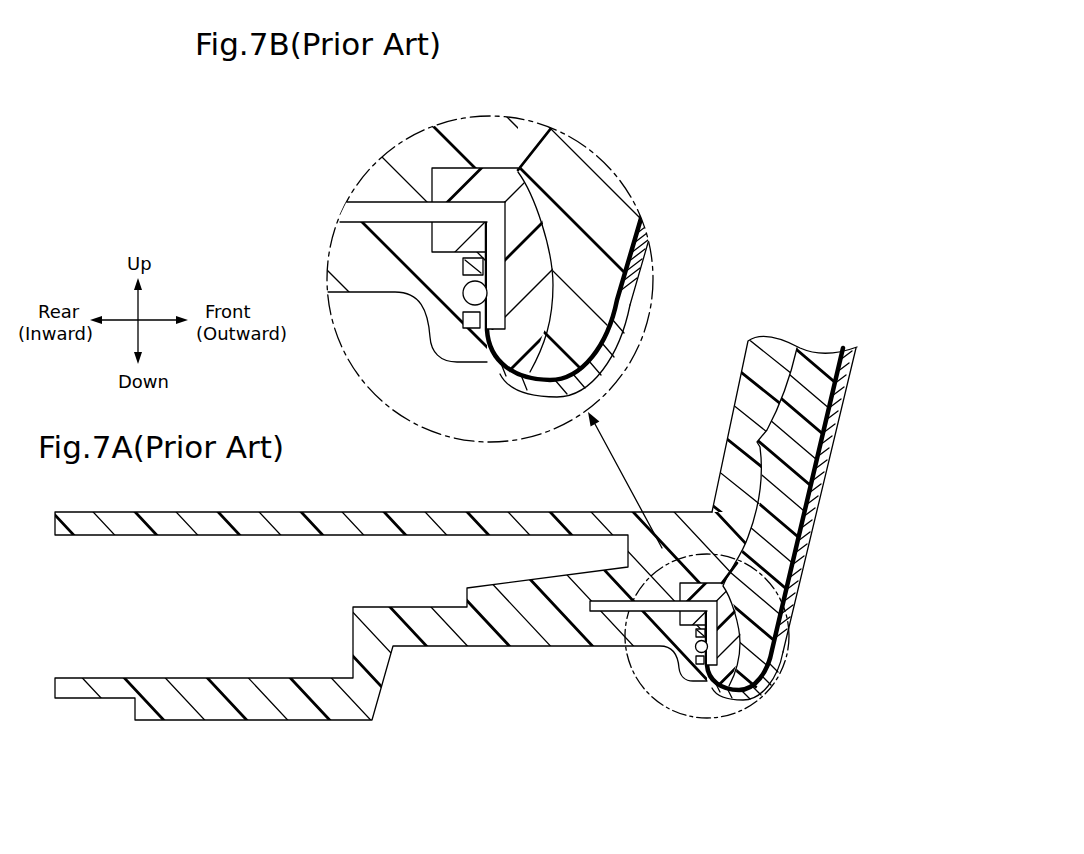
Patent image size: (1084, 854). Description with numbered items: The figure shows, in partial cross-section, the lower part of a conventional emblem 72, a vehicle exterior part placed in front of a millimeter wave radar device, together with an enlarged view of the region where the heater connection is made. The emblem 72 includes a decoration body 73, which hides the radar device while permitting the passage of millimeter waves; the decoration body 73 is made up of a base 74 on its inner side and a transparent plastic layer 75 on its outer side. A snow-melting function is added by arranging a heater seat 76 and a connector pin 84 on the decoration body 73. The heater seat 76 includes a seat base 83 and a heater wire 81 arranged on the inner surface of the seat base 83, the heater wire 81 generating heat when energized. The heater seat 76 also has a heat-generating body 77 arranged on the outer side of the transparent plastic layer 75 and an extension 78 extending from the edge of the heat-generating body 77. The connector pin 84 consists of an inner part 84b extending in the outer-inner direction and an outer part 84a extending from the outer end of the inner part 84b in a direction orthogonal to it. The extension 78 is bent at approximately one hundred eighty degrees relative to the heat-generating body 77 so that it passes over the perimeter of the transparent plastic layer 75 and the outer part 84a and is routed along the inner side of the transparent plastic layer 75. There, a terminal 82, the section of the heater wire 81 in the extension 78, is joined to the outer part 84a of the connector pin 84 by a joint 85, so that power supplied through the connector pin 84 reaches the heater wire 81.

In FIG. 7A, the emblem 72 is at (575, 704).
In FIG. 7B, the emblem 72 is at (430, 293).
In FIG. 7A, the decoration body 73 is at (720, 532).
In FIG. 7B, the decoration body 73 is at (461, 281).
In FIG. 7A, the base 74 is at (772, 339).
In FIG. 7B, the base 74 is at (496, 120).
In FIG. 7A, the transparent plastic layer 75 is at (812, 347).
In FIG. 7B, the transparent plastic layer 75 is at (573, 145).
In FIG. 7A, the heater seat 76 is at (808, 499).
In FIG. 7B, the heater seat 76 is at (611, 254).
In FIG. 7A, the heat-generating body 77 is at (808, 499).
In FIG. 7B, the heat-generating body 77 is at (611, 254).
In FIG. 7A, the extension 78 is at (703, 695).
In FIG. 7B, the extension 78 is at (553, 396).
In FIG. 7A, the heater wire 81 is at (838, 352).
In FIG. 7B, the heater wire 81 is at (620, 232).
In FIG. 7A, the terminal 82 is at (702, 647).
In FIG. 7B, the terminal 82 is at (480, 323).
In FIG. 7A, the seat base 83 is at (847, 382).
In FIG. 7B, the seat base 83 is at (620, 320).
In FIG. 7A, the connector pin 84 is at (607, 615).
In FIG. 7B, the connector pin 84 is at (358, 299).
In FIG. 7B, the outer part 84a is at (505, 333).
In FIG. 7B, the inner part 84b is at (348, 204).
In FIG. 7A, the joint 85 is at (700, 646).
In FIG. 7B, the joint 85 is at (467, 293).